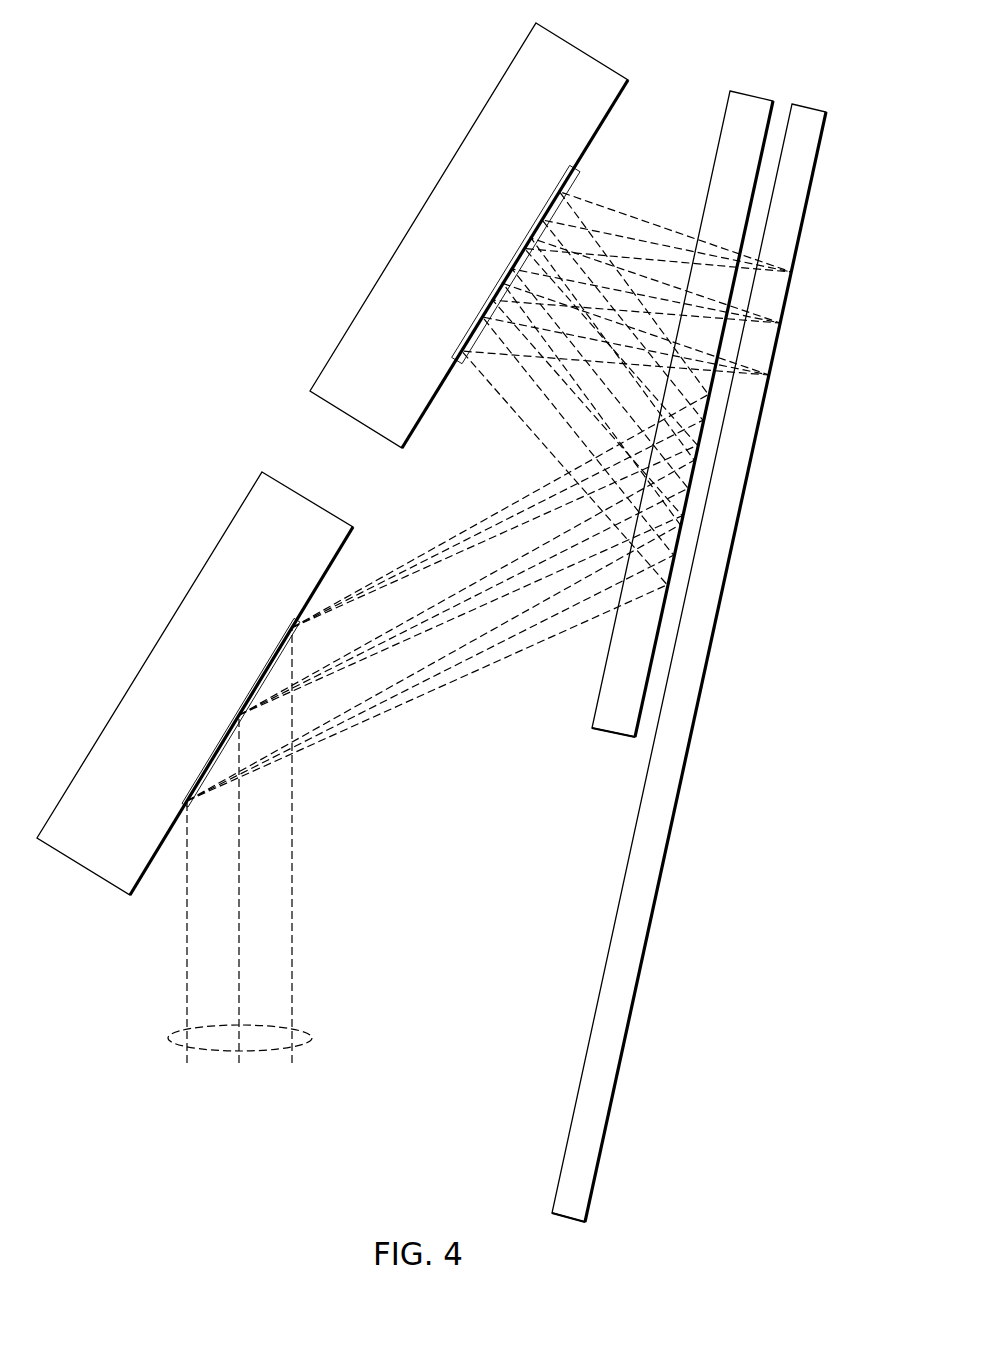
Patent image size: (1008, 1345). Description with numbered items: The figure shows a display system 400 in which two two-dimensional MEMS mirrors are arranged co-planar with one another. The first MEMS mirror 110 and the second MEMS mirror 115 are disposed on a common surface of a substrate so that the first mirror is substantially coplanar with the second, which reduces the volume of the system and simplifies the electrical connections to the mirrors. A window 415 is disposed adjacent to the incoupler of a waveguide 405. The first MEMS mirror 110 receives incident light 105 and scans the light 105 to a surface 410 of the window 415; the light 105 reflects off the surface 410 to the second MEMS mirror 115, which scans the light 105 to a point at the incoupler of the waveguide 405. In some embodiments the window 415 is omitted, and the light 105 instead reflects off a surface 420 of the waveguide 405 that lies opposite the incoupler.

The display system 400 is at (180, 137).
The light 105 is at (170, 1040).
The first 2-D MEMS mirror 110 is at (148, 648).
The second 2-D MEMS mirror 115 is at (421, 198).
The waveguide 405 is at (617, 912).
The surface 410 is at (693, 494).
The window 415 is at (603, 672).
The surface 420 is at (823, 186).